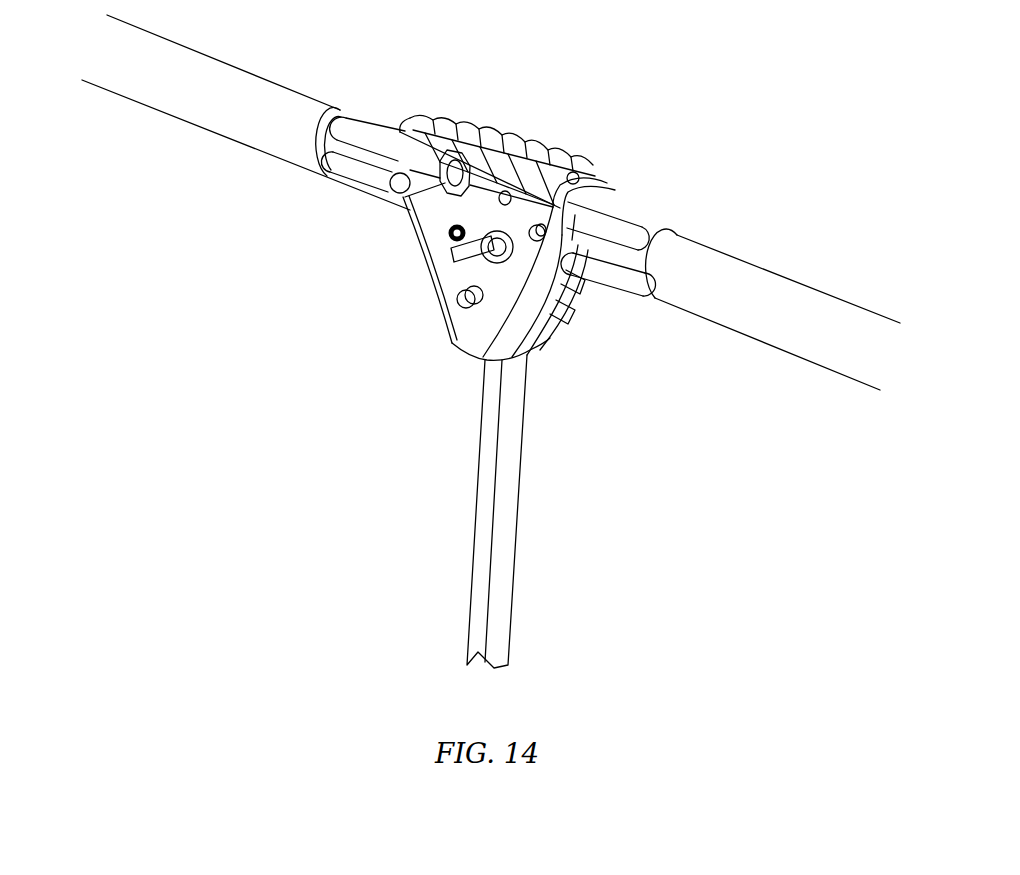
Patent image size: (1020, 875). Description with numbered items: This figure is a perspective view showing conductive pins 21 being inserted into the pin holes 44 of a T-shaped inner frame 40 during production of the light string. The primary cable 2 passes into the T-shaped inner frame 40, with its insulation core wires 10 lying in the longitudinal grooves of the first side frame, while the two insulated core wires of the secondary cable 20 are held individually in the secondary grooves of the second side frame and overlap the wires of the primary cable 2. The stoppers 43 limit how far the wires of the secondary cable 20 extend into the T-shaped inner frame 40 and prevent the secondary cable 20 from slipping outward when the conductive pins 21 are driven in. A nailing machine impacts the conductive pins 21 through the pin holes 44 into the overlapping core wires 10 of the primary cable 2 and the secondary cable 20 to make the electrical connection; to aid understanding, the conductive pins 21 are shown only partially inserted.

The primary cable 2 is at (790, 278).
The insulation core wires 10 is at (402, 108).
The secondary cable 20 is at (513, 440).
The conductive pins 21 is at (447, 258).
The T-shaped inner frame 40 is at (512, 318).
The stoppers 43 is at (497, 123).
The pin holes 44 is at (460, 120).